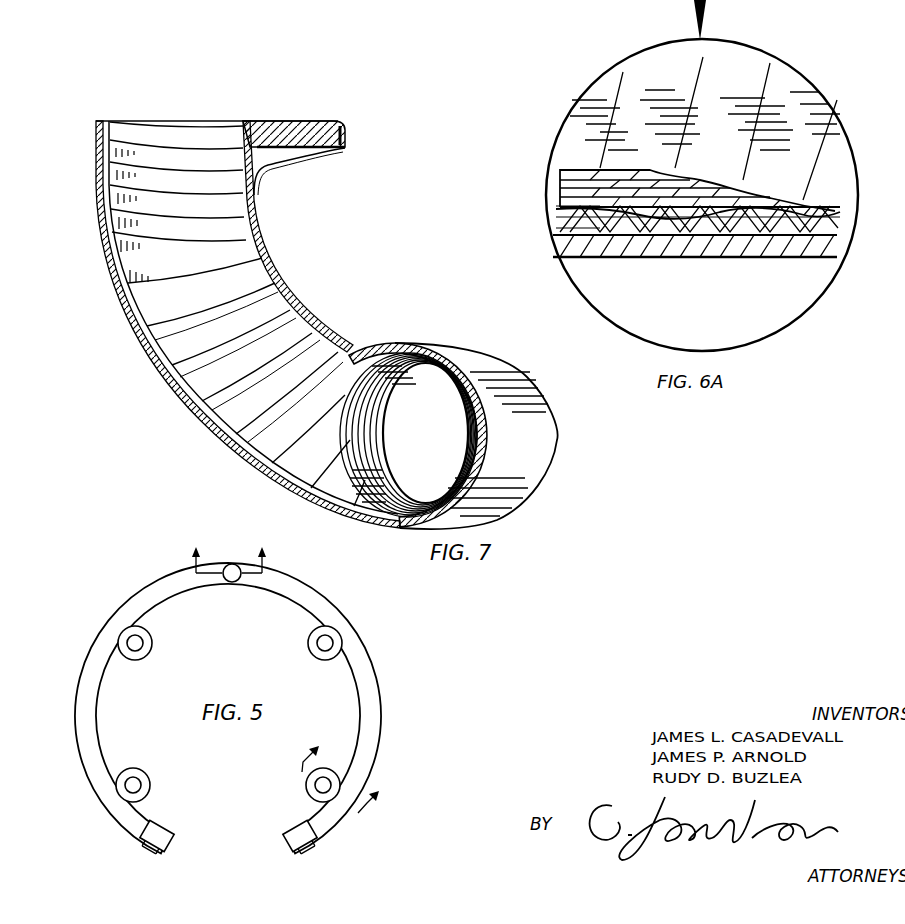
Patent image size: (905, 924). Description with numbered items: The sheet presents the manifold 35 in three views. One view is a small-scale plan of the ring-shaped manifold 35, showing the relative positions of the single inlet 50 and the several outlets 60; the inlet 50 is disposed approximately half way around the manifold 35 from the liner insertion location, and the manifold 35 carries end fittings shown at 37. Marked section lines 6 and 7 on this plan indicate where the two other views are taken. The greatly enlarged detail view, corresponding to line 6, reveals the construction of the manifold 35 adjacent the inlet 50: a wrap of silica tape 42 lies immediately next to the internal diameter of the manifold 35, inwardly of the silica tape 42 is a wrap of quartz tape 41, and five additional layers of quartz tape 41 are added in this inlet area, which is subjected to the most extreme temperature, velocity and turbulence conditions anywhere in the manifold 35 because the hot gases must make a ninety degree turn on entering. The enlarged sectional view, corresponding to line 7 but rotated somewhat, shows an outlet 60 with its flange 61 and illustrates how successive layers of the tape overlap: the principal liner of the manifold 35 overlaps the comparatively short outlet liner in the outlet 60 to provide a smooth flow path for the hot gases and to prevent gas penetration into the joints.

In FIG. 5, the manifold 35 is at (305, 581).
In FIG. 5, the ring end block 37 is at (166, 843).
In FIG. 6A, the quartz tape 41 is at (572, 172).
In FIG. 7, the silica tape 42 is at (205, 430).
In FIG. 6A, the silica tape 42 is at (820, 243).
In FIG. 5, the inlet 50 is at (230, 564).
In FIG. 7, the outlet 60 is at (283, 301).
In FIG. 5, the outlet 60 is at (119, 634).
In FIG. 7, the flange 61 is at (265, 122).
In FIG. 5, the section line 6- 6 is at (229, 550).
In FIG. 5, the section line 7- 7 is at (344, 772).